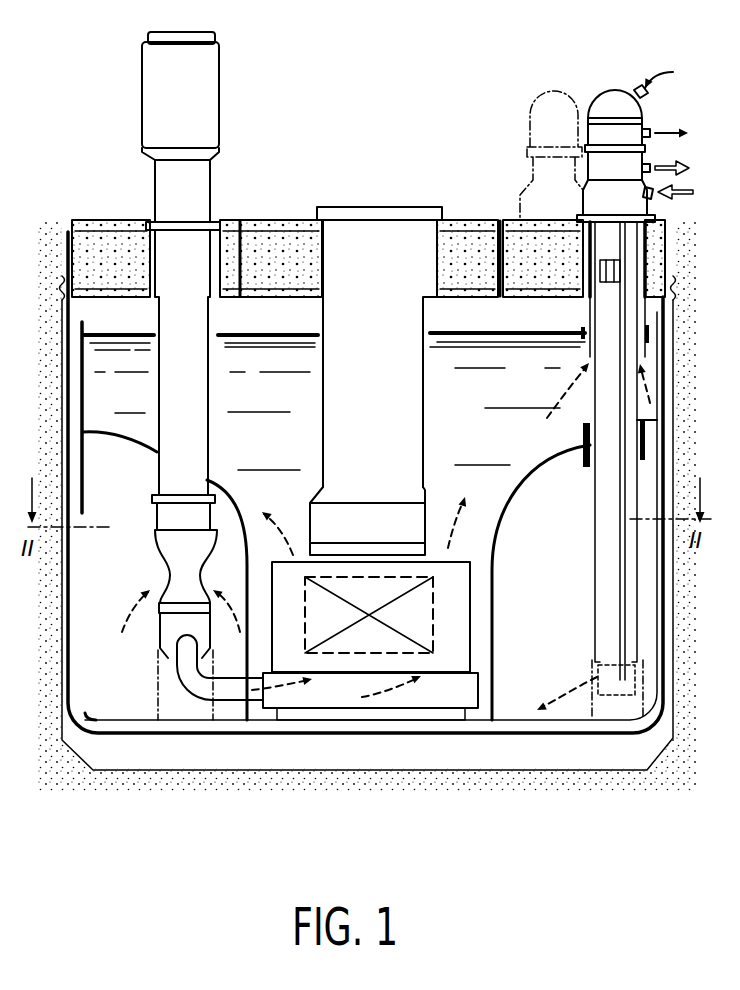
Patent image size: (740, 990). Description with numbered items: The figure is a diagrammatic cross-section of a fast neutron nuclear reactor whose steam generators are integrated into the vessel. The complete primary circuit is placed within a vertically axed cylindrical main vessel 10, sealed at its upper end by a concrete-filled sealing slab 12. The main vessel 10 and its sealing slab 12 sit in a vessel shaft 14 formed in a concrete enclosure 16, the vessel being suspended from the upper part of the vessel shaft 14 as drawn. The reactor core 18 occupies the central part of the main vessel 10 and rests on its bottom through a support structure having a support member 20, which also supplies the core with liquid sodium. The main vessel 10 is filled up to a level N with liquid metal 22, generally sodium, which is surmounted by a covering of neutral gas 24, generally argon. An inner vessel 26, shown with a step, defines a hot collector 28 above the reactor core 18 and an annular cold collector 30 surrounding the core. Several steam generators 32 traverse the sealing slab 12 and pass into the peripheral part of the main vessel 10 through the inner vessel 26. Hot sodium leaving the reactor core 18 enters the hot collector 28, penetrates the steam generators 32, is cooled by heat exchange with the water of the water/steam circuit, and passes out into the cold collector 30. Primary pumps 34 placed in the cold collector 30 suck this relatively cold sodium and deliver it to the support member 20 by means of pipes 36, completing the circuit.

The main vessel 10 is at (73, 317).
The sealing slab 12 is at (118, 250).
The level N is at (264, 333).
The covering of neutral gas 24 is at (468, 312).
The liquid metal 22 is at (124, 398).
The hot collector 28 is at (280, 452).
The inner vessel 26 is at (532, 474).
The concrete enclosure 16 is at (45, 432).
The primary pumps 34 is at (145, 540).
The steam generators 32 is at (588, 553).
The cold collector 30 is at (550, 652).
The reactor core 18 is at (380, 650).
The vessel shaft 14 is at (63, 637).
The pipes 36 is at (232, 690).
The support member 20 is at (443, 690).